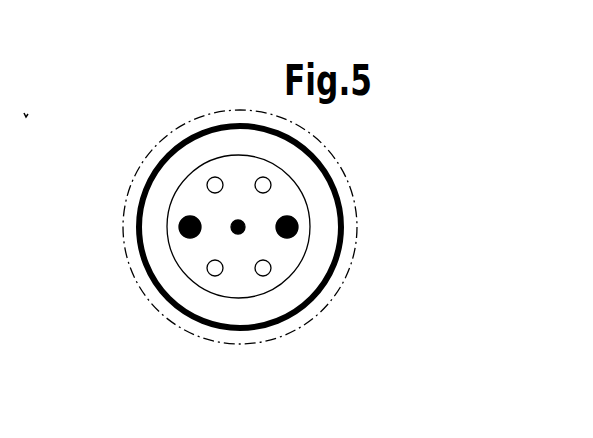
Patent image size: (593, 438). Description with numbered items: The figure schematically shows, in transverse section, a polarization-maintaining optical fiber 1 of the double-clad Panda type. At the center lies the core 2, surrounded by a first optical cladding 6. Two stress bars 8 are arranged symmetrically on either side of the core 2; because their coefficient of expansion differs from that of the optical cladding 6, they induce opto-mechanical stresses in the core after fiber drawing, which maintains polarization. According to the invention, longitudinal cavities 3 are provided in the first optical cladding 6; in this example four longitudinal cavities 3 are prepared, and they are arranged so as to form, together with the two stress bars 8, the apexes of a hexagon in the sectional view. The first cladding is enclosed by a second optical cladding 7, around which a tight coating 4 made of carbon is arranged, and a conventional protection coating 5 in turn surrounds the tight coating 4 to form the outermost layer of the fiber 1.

The optical fiber 1 is at (86, 209).
The core 2 is at (245, 222).
The longitudinal cavity 3 is at (271, 274).
The tight coating 4 is at (137, 250).
The protection coating 5 is at (142, 162).
The first optical cladding 6 is at (243, 285).
The second optical cladding 7 is at (203, 145).
The stress bar 8 is at (298, 227).